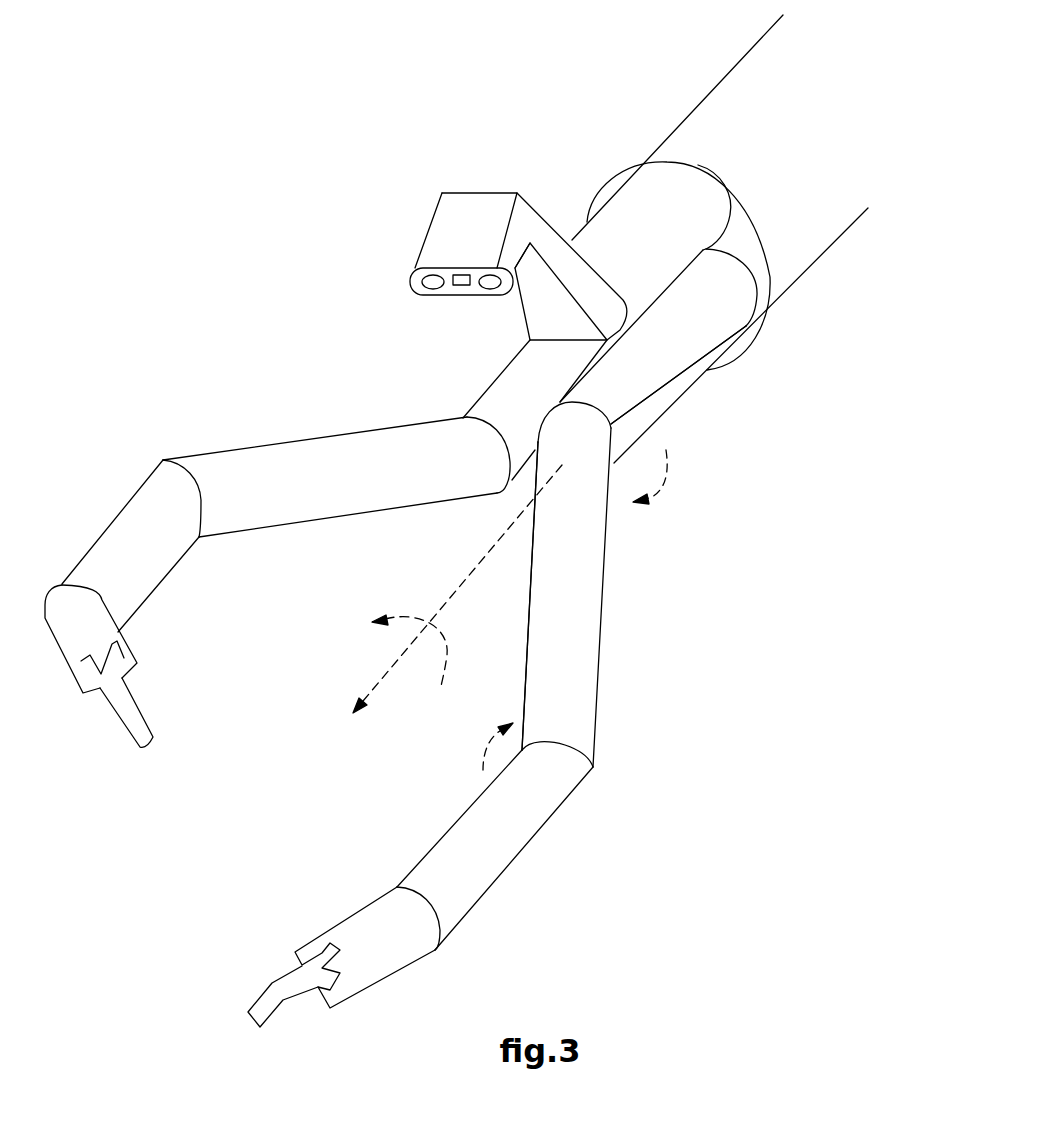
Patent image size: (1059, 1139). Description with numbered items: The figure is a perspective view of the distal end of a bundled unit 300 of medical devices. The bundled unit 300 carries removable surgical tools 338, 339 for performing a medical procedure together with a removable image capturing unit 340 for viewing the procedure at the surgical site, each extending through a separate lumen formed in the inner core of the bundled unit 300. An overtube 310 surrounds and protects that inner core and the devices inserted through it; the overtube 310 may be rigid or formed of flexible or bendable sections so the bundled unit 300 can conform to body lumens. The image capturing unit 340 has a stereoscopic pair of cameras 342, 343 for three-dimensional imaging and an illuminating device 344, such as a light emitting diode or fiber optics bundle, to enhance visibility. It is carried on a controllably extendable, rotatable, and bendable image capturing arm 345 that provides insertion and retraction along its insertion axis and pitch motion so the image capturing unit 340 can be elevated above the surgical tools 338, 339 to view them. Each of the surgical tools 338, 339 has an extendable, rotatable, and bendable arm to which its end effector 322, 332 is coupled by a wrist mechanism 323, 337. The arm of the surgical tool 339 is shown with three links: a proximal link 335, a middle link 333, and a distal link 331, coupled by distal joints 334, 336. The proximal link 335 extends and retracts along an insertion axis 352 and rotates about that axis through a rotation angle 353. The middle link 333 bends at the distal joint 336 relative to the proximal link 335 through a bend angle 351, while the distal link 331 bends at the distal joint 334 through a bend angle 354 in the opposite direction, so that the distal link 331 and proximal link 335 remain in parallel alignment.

The bundled unit 300 is at (655, 65).
The overtube 310 is at (805, 278).
The image capturing arm 345 is at (556, 186).
The proximal link 335 is at (670, 348).
The image capturing unit 340 is at (410, 215).
The camera 342 is at (392, 296).
The camera 343 is at (477, 308).
The illuminating device 344 is at (440, 303).
The surgical tool 338 is at (246, 412).
The wrist mechanism 323 is at (62, 572).
The end effector 322 is at (98, 728).
The middle link 333 is at (590, 662).
The distal joint 336 is at (612, 421).
The distal joint 334 is at (608, 771).
The surgical tool 339 is at (650, 618).
The distal link 331 is at (492, 876).
The wrist mechanism 337 is at (382, 888).
The end effector 332 is at (262, 969).
The bend angle 351 is at (673, 477).
The insertion axis 352 is at (467, 582).
The rotation angle 353 is at (450, 657).
The bend angle 354 is at (478, 742).